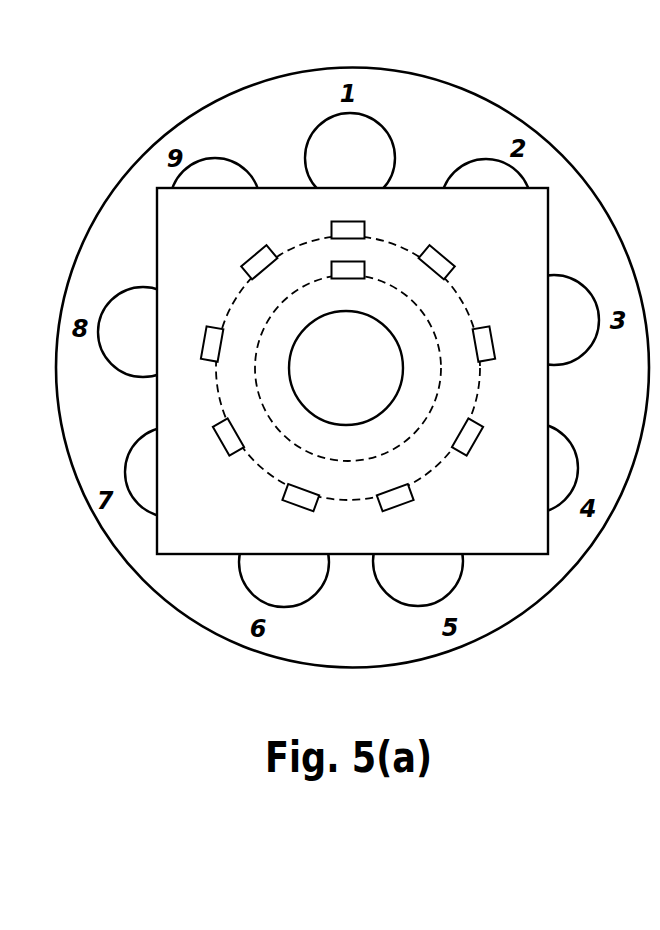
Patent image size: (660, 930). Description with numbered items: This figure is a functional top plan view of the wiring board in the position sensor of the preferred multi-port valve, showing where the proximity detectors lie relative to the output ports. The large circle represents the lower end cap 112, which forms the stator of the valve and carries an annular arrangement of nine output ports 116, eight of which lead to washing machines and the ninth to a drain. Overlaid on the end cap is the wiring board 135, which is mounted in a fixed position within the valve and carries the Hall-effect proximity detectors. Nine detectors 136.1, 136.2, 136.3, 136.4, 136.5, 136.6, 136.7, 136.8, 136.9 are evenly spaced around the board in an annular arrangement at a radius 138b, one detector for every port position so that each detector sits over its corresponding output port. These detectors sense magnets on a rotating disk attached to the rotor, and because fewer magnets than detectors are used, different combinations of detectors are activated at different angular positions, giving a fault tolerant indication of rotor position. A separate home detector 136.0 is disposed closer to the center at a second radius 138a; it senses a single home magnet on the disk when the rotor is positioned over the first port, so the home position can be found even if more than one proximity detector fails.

The lower end cap 112 is at (163, 138).
The output ports 116 is at (381, 124).
The wiring board 135 is at (530, 560).
The home detector 136.0 is at (348, 279).
The proximity detector 136.1 is at (365, 228).
The proximity detector 136.2 is at (450, 265).
The proximity detector 136.3 is at (493, 350).
The proximity detector 136.4 is at (468, 459).
The proximity detector 136.5 is at (387, 509).
The proximity detector 136.6 is at (288, 502).
The proximity detector 136.7 is at (218, 434).
The proximity detector 136.8 is at (207, 329).
The proximity detector 136.9 is at (253, 262).
The second radius 138a is at (294, 443).
The radius 138b is at (306, 234).